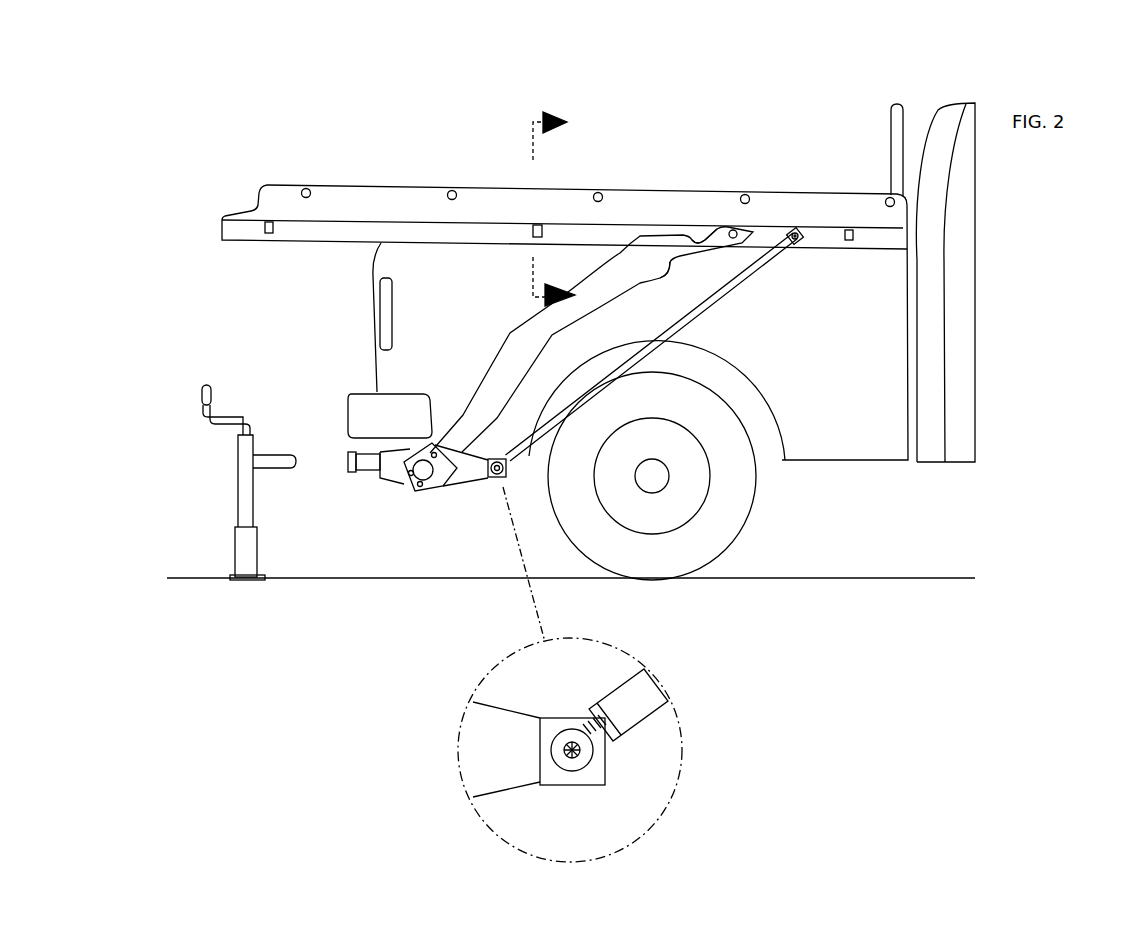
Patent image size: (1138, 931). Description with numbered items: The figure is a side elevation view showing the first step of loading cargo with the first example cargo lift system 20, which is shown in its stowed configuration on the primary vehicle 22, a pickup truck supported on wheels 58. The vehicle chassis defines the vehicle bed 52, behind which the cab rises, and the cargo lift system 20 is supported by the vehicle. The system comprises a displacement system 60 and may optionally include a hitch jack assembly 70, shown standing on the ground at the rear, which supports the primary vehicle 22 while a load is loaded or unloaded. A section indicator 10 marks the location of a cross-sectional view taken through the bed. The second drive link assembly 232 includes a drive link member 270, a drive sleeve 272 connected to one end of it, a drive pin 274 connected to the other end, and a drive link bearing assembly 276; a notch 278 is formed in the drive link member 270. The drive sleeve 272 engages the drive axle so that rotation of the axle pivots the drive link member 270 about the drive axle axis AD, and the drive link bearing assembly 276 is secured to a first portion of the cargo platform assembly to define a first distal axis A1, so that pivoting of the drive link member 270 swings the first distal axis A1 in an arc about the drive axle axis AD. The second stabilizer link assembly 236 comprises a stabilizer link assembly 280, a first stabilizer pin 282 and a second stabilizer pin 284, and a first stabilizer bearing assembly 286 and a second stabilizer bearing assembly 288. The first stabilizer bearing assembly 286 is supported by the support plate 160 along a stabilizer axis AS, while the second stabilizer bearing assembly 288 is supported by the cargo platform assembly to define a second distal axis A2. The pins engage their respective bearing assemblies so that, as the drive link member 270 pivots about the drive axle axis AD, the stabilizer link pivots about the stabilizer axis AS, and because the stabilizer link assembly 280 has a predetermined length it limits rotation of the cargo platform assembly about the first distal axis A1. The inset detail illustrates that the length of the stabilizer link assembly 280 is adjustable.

The cargo lift system 20 is at (306, 160).
The vehicle bed 52 is at (376, 173).
The primary vehicle 22 is at (930, 102).
The wheels 58 is at (702, 543).
The section view indicator 10 is at (565, 209).
The hitch jack assembly 70 is at (221, 485).
The displacement system 60 is at (354, 490).
The drive sleeve 272 is at (440, 487).
The drive axle axis AD is at (410, 483).
The support plate 160 is at (460, 473).
The second drive link assembly 232 is at (512, 312).
The drive link member 270 is at (503, 368).
The drive pin 274 is at (715, 226).
The drive link bearing assembly 276 is at (702, 240).
The notch 278 is at (662, 274).
The first distal axis A1 is at (733, 226).
The second stabilizer link assembly 236 is at (758, 286).
The stabilizer link assembly 280 is at (730, 283).
The second stabilizer pin 284 is at (800, 247).
The second stabilizer bearing assembly 288 is at (795, 253).
The second distal axis A2 is at (798, 226).
The first stabilizer bearing assembly 286 is at (565, 740).
The first stabilizer pin 282 is at (583, 763).
The stabilizer axis AS is at (568, 762).